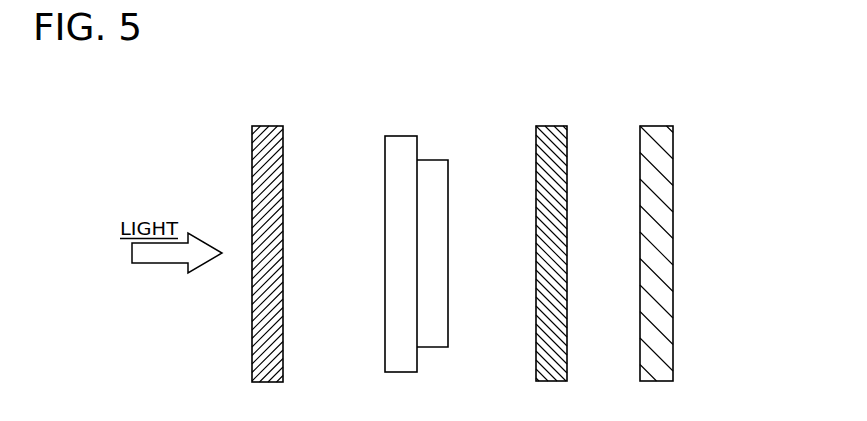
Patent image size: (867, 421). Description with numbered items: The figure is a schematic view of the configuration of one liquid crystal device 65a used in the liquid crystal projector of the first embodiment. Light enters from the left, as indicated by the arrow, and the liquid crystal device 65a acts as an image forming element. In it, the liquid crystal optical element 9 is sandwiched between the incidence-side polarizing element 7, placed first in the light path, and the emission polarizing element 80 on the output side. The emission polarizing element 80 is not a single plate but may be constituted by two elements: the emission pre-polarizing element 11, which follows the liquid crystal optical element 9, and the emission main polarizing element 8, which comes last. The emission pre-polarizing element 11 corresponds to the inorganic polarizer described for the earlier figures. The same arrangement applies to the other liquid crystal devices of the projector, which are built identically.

The incidence-side polarizing element 7 is at (266, 126).
The liquid crystal optical element 9 is at (400, 136).
The emission pre-polarizing element 11 is at (554, 126).
The emission main polarizing element 8 is at (661, 126).
The emission polarizing element 80 is at (666, 76).
The liquid crystal device 65a is at (565, 36).